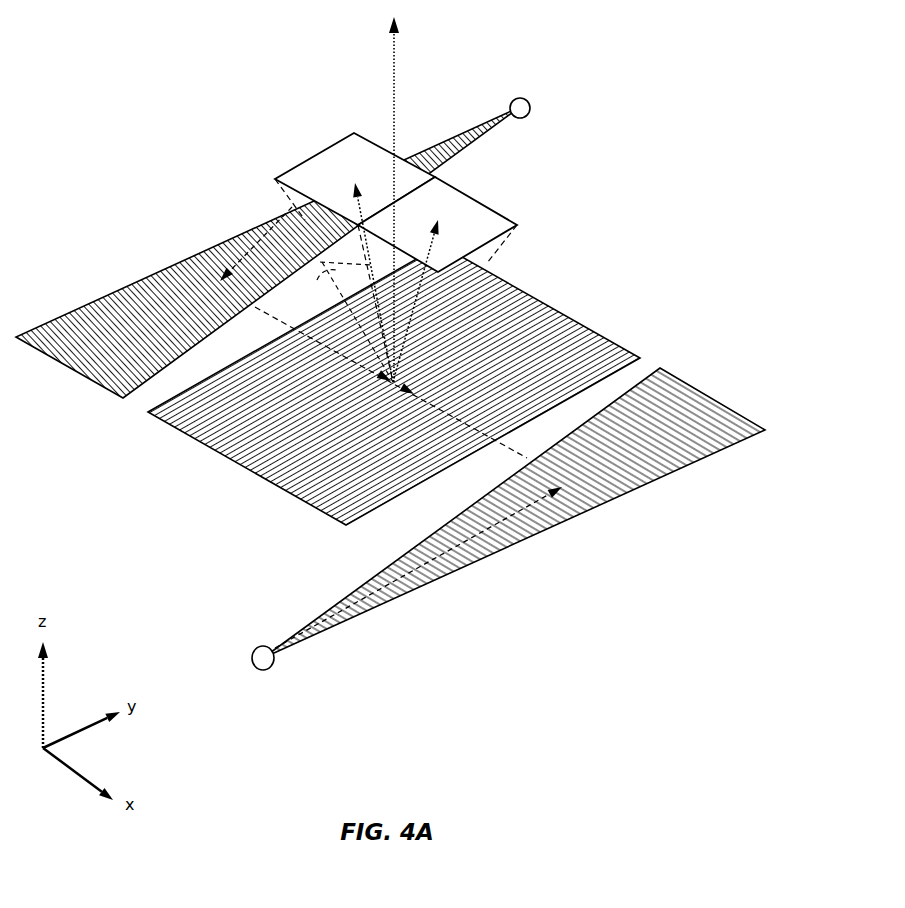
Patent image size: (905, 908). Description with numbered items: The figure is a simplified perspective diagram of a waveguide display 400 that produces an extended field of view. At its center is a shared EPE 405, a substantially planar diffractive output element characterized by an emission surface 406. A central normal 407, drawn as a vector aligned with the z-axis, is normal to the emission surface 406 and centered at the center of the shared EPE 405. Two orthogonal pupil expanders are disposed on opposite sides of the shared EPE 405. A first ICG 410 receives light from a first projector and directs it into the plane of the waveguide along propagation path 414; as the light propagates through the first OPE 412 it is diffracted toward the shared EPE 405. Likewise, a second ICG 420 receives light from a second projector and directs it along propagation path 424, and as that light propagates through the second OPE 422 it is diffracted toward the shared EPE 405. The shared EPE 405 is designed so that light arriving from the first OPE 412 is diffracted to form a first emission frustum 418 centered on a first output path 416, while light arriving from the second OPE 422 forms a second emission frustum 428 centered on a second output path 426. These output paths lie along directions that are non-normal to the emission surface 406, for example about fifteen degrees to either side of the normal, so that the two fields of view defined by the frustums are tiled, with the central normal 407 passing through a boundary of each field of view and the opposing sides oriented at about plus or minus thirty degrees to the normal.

The waveguide display 400 is at (136, 67).
The shared EPE 405 is at (233, 460).
The emission surface 406 is at (354, 473).
The central normal 407 is at (395, 63).
The first ICG 410 is at (524, 98).
The first OPE 412 is at (143, 280).
The propagation path 414 is at (262, 234).
The first output path 416 is at (418, 295).
The first emission frustum 418 is at (454, 213).
The second ICG 420 is at (256, 647).
The second OPE 422 is at (603, 502).
The propagation path 424 is at (478, 562).
The second output path 426 is at (338, 322).
The second emission frustum 428 is at (369, 168).